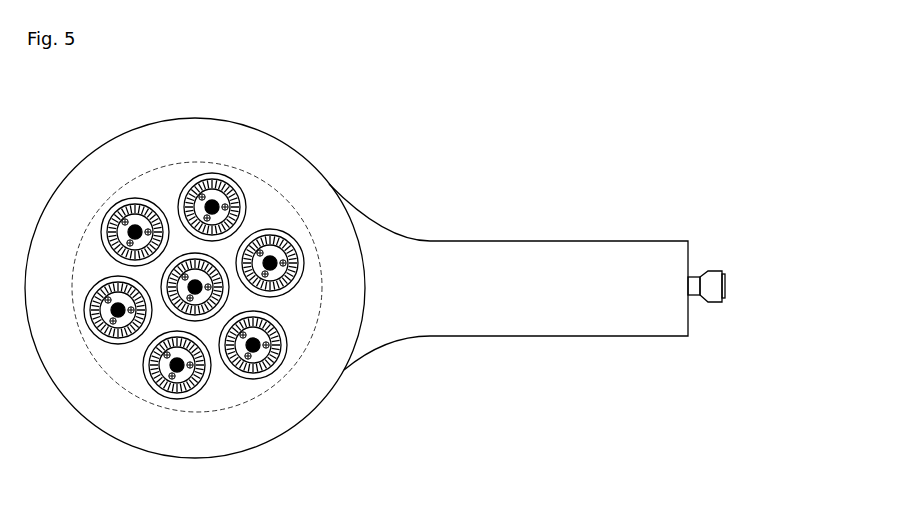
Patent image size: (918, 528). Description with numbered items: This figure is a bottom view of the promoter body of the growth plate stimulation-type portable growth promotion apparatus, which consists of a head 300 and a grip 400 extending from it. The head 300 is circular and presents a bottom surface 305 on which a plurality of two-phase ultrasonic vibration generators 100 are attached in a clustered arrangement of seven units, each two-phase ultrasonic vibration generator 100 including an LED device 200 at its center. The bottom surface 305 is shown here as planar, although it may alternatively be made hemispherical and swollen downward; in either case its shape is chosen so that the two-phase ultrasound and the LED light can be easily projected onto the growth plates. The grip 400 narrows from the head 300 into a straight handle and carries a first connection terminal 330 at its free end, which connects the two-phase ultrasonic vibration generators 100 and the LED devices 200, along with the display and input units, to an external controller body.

The two-phase ultrasonic vibration generator 100 is at (297, 395).
The LED device 200 is at (258, 350).
The head 300 is at (313, 146).
The bottom surface 305 is at (283, 211).
The first connection terminal 330 is at (712, 280).
The grip 400 is at (513, 225).